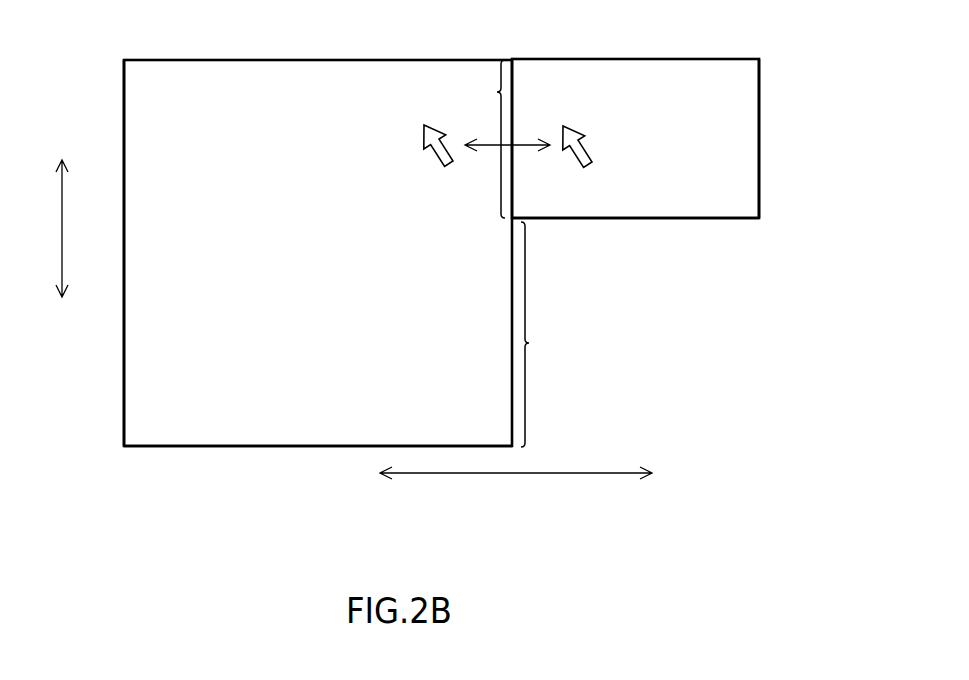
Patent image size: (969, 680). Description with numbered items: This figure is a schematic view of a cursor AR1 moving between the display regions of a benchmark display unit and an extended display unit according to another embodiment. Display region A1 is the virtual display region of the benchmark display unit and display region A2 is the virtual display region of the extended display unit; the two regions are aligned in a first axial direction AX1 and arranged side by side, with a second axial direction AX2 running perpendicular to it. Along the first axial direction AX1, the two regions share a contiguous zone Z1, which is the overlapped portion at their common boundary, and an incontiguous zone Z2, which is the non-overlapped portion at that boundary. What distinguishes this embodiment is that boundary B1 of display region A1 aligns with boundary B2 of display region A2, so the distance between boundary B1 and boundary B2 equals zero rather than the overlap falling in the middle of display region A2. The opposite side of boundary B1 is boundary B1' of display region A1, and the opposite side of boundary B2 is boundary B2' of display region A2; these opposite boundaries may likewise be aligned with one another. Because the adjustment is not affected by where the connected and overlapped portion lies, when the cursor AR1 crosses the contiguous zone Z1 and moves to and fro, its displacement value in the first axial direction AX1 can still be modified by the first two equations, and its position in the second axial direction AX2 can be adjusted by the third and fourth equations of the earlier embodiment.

The boundary of display region A2 B2 is at (318, 228).
The opposite boundary of display region A2 B2' is at (318, 473).
The boundary of display region A1 B1 is at (636, 112).
The opposite boundary of display region A1 B1' is at (635, 246).
The display region A1 is at (759, 140).
The display region A2 is at (124, 372).
The contiguous zone Z1 is at (486, 139).
The incontiguous zone Z2 is at (544, 334).
The first axial direction AX1 is at (516, 492).
The second axial direction AX2 is at (41, 228).
The cursor AR1 is at (590, 146).